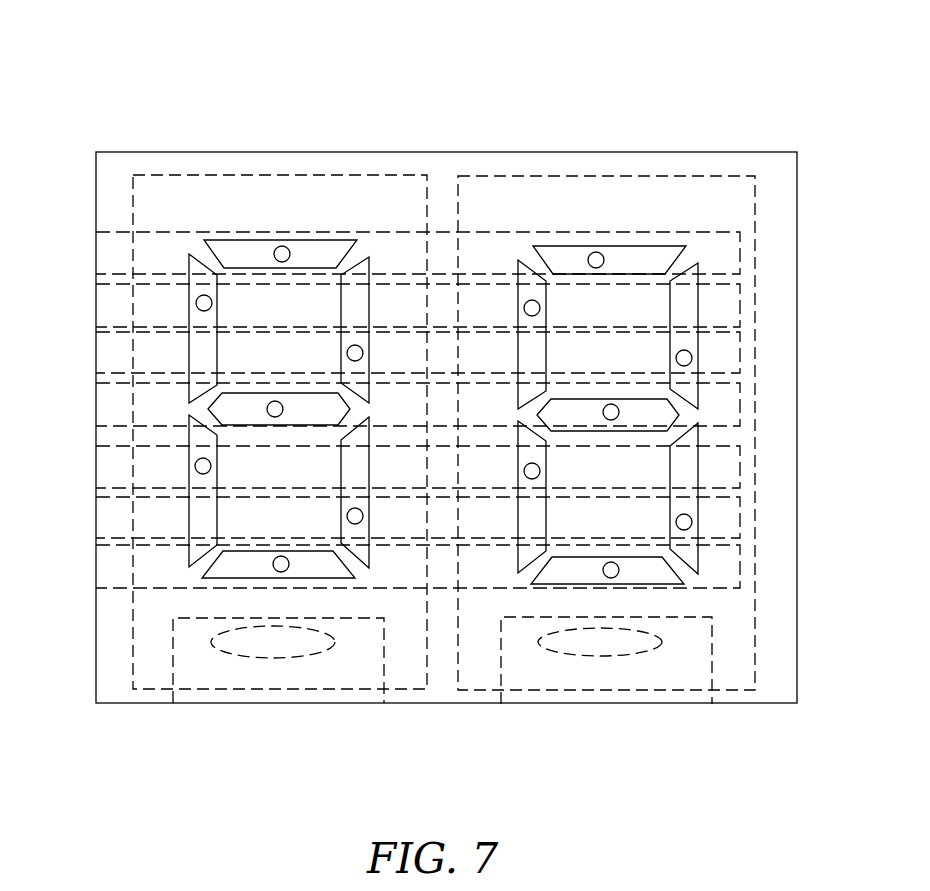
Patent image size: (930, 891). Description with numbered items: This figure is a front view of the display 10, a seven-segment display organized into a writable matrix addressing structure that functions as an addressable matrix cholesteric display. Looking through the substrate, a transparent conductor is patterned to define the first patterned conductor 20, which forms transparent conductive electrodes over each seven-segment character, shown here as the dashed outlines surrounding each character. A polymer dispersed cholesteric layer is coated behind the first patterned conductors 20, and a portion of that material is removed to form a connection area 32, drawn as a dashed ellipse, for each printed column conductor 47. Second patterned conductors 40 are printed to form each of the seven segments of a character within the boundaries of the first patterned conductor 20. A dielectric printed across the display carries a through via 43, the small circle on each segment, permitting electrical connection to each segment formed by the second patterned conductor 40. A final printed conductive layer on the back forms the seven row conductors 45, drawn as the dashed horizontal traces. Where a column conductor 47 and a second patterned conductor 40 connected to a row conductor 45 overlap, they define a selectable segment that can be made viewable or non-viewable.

The display 10 is at (297, 95).
The first patterned conductor 20 is at (155, 668).
The connection area 32 is at (610, 640).
The second patterned conductor 40 is at (310, 252).
The through via 43 is at (277, 251).
The row conductor 45 is at (110, 252).
The column conductor 47 is at (529, 678).